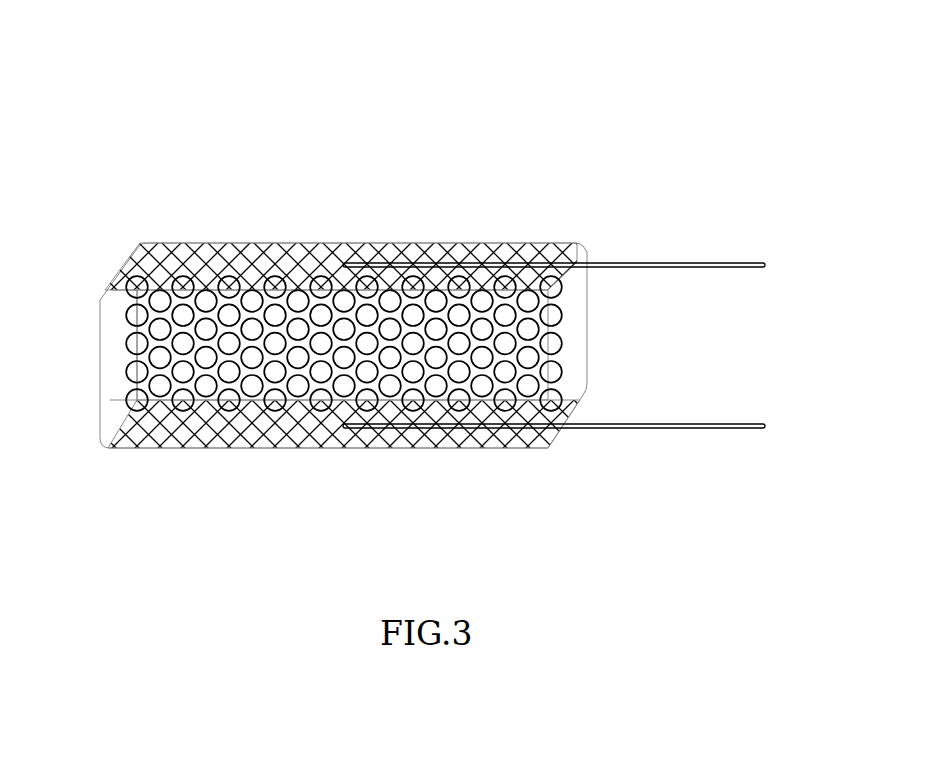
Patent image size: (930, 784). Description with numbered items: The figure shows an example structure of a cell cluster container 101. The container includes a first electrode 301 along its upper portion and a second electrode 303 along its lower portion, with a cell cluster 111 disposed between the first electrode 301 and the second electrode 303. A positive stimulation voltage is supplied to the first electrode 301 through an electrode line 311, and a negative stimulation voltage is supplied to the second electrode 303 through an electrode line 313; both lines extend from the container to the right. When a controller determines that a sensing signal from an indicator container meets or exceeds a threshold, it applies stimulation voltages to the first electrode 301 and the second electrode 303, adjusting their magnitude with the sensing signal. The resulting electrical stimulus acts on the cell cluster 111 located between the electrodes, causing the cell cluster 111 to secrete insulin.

The cell cluster container 101 is at (425, 267).
The first electrode 301 is at (269, 253).
The second electrode 303 is at (267, 446).
The cell cluster 111 is at (183, 347).
The electrode line 311 is at (742, 261).
The electrode line 313 is at (742, 421).